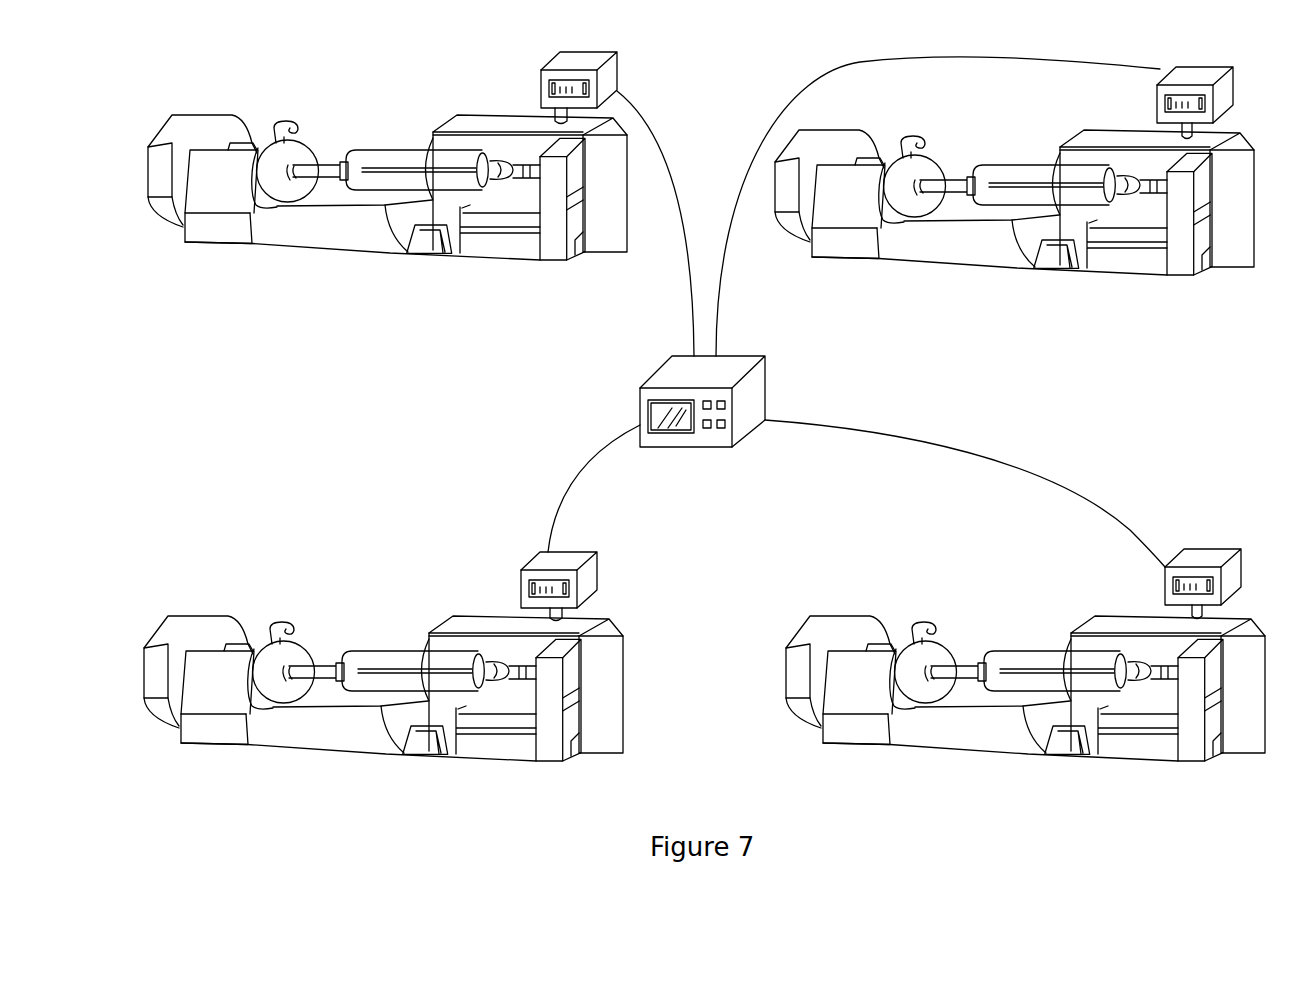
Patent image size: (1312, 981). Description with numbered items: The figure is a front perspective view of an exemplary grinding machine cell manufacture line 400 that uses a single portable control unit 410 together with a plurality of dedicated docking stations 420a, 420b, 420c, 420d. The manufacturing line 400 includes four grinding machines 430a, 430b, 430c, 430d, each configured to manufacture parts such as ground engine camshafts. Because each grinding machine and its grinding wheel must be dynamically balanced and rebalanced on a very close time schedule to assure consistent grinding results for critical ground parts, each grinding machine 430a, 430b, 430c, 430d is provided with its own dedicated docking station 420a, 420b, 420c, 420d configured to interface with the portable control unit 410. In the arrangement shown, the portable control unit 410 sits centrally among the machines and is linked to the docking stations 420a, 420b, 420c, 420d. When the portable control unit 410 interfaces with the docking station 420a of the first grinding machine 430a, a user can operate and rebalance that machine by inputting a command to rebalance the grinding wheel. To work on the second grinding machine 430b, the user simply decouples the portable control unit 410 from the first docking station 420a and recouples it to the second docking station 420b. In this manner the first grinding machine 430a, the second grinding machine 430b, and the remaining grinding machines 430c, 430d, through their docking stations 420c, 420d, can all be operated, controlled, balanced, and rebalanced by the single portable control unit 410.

The grinding machine cell manufacture line 400 is at (245, 785).
The portable control unit 410 is at (690, 447).
The docking station 420a is at (610, 78).
The docking station 420b is at (1218, 92).
The docking station 420c is at (588, 575).
The docking station 420d is at (1228, 570).
The grinding machine 430a is at (492, 257).
The grinding machine 430b is at (1120, 274).
The grinding machine 430c is at (497, 757).
The grinding machine 430d is at (1133, 758).